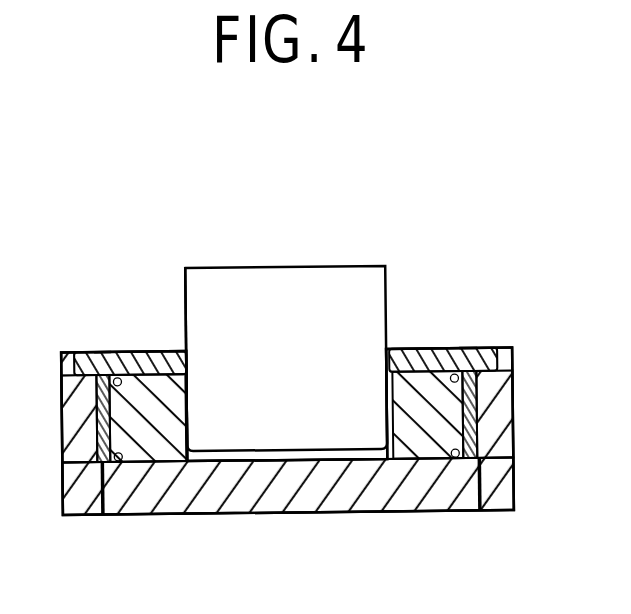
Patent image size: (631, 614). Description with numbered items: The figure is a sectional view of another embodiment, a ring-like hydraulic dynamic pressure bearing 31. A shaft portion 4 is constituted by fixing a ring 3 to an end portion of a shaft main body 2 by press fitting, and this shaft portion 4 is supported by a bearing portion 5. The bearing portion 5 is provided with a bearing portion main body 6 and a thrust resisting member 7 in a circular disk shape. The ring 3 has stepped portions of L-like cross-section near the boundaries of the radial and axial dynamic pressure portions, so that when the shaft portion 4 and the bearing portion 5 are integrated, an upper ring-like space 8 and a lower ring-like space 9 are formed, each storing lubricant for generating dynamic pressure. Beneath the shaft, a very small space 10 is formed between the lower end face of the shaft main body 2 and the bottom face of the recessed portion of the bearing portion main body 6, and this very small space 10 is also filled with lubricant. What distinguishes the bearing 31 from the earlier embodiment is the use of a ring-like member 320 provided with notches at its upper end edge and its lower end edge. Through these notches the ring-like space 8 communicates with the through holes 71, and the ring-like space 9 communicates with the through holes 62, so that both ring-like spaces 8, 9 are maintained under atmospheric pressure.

The ring-like hydraulic dynamic pressure bearing 31 is at (406, 202).
The shaft main body 2 is at (287, 288).
The ring 3 is at (412, 450).
The shaft portion 4 is at (176, 292).
The bearing portion 5 is at (525, 372).
The bearing portion main body 6 is at (80, 468).
The thrust resisting member 7 is at (410, 347).
The through holes 71 is at (102, 352).
The ring-like space 8 is at (117, 352).
The ring-like space 9 is at (127, 465).
The very small space 10 is at (272, 463).
The through holes 62 is at (103, 515).
The ring-like member 320 is at (480, 403).